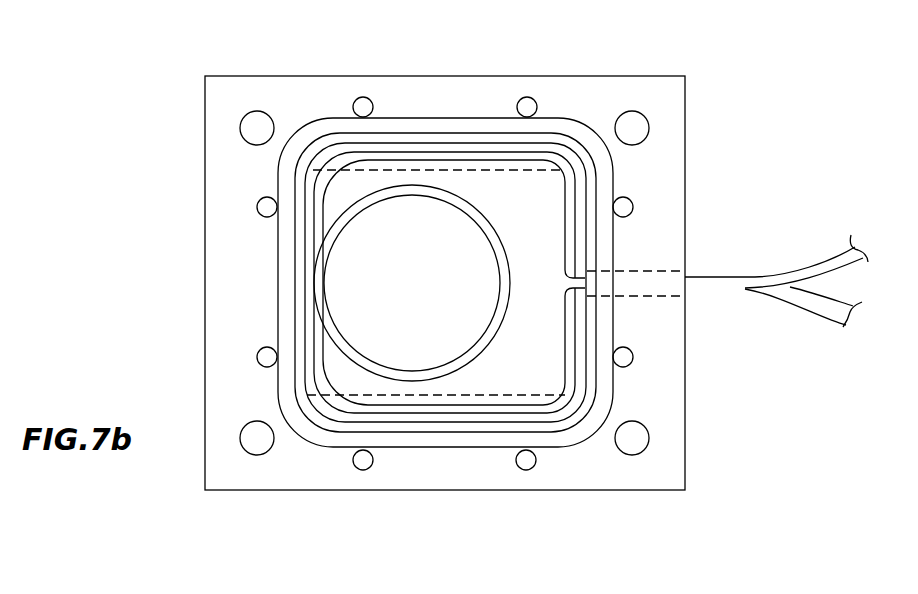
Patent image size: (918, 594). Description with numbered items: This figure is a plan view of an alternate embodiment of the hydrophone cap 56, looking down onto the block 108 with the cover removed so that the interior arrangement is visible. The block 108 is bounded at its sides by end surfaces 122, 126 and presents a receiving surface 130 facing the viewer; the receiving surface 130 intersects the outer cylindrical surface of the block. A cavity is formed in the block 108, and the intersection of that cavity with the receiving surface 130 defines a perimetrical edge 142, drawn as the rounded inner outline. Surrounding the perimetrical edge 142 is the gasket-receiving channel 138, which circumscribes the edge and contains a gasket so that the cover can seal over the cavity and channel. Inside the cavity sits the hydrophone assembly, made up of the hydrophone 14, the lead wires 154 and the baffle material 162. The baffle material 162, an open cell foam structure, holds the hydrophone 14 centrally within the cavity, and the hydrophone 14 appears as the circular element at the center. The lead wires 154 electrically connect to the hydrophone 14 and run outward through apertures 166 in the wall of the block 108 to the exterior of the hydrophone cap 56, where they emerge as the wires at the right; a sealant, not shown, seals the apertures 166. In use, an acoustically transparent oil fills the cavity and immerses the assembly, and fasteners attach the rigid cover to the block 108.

The hydrophone 14 is at (333, 223).
The hydrophone cap 56 is at (228, 554).
The block 108 is at (688, 136).
The end surface 122 is at (688, 354).
The end surface 126 is at (205, 348).
The receiving surface 130 is at (662, 410).
The gasket-receiving channel 138 is at (550, 118).
The perimetrical edge 142 is at (377, 138).
The lead wires 154 is at (348, 158).
The baffle material 162 is at (498, 395).
The apertures 166 is at (647, 268).